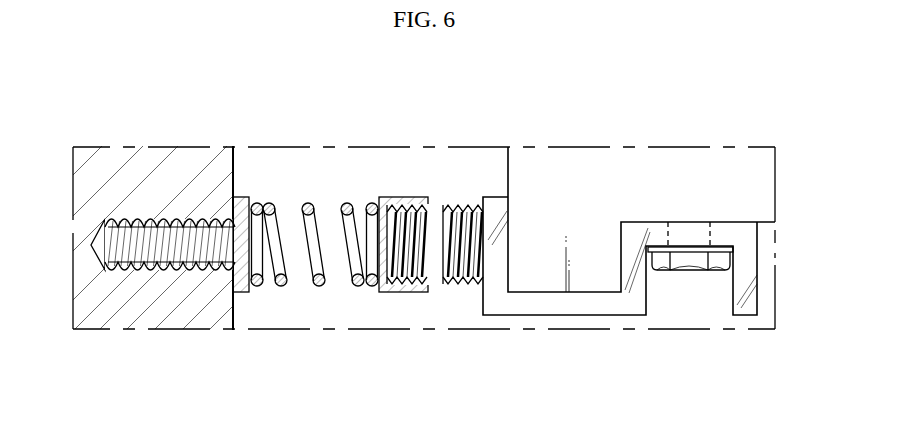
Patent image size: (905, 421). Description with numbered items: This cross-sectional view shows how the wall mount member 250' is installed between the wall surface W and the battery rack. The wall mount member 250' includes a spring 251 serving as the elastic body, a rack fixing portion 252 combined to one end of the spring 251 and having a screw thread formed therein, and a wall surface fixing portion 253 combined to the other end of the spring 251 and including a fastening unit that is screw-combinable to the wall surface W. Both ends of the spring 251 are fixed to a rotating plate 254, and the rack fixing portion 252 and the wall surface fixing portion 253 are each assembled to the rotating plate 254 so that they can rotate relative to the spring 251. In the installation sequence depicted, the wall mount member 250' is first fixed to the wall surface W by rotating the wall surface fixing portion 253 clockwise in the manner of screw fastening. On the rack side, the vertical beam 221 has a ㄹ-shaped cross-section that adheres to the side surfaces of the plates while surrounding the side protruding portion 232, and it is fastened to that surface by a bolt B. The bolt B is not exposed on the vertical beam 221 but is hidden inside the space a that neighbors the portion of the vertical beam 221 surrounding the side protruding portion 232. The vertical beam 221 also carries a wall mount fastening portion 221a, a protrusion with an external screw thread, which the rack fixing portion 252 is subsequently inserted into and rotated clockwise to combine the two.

The wall surface W is at (191, 157).
The wall mount member 250' is at (326, 221).
The wall surface fixing portion 253 is at (240, 198).
The rotating plate 254 is at (255, 203).
The spring 251 is at (320, 286).
The rack fixing portion 252 is at (390, 197).
The wall mount fastening portion 221a is at (457, 278).
The vertical beam 221 is at (582, 303).
The side protruding portion 232 is at (548, 265).
The bolt B is at (663, 263).
The space a is at (705, 299).